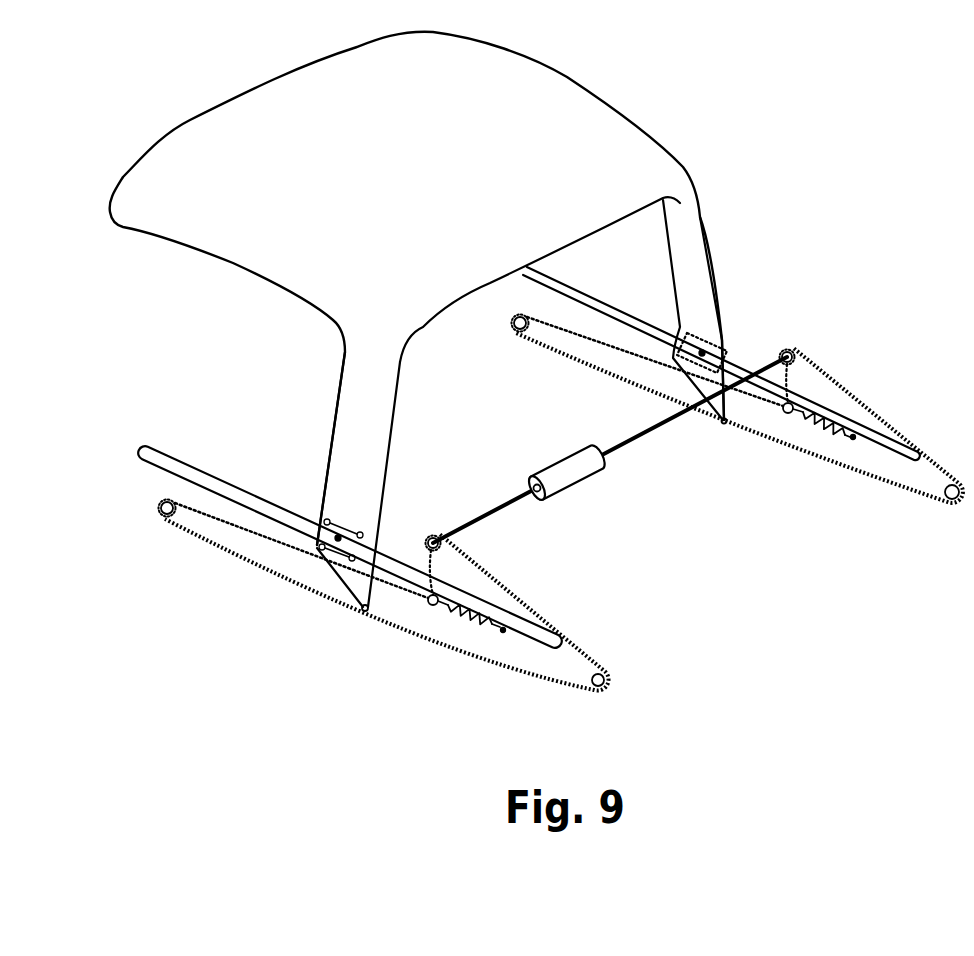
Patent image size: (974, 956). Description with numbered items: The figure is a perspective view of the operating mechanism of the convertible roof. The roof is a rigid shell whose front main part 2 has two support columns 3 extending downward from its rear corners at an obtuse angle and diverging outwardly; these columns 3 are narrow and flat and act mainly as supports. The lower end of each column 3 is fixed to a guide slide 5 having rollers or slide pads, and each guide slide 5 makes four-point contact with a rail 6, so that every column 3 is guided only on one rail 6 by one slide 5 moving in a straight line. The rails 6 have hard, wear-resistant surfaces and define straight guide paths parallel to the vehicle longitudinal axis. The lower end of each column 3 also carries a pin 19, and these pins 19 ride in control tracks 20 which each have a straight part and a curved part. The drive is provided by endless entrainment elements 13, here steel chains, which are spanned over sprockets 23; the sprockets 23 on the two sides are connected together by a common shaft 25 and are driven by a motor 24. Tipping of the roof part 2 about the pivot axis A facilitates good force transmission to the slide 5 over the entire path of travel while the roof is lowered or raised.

The front main part 2 is at (417, 288).
The support column 3 is at (352, 448).
The guide slide 5 is at (337, 553).
The rail 6 is at (222, 478).
The endless entrainment element 13 is at (237, 528).
The pin 19 is at (363, 612).
The control track 20 is at (467, 660).
The sprocket 23 is at (433, 533).
The motor 24 is at (570, 472).
The common shaft 25 is at (640, 440).
The pivot axis A is at (330, 553).